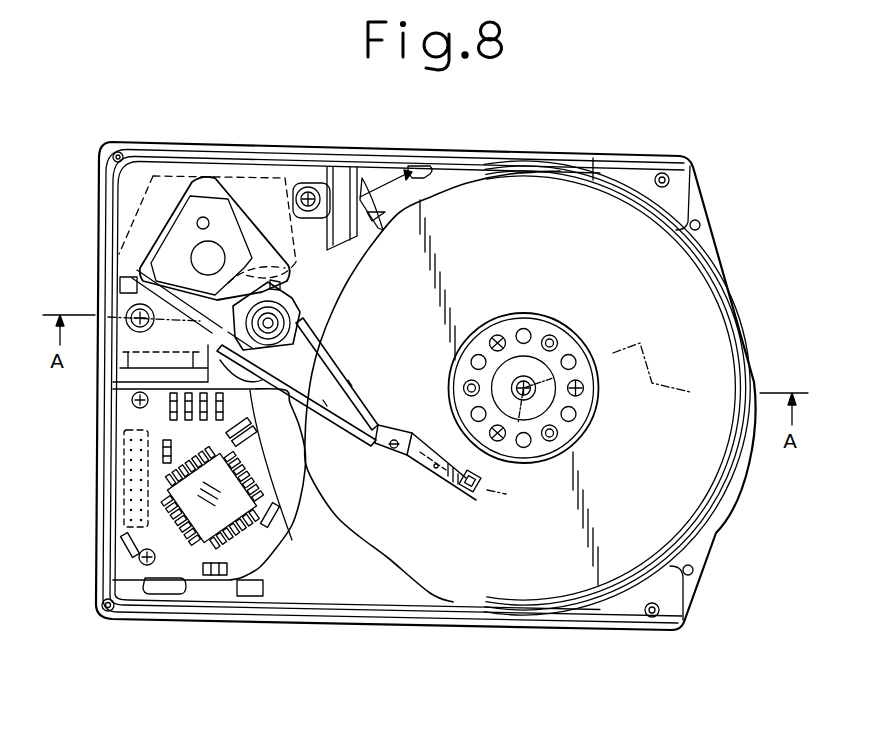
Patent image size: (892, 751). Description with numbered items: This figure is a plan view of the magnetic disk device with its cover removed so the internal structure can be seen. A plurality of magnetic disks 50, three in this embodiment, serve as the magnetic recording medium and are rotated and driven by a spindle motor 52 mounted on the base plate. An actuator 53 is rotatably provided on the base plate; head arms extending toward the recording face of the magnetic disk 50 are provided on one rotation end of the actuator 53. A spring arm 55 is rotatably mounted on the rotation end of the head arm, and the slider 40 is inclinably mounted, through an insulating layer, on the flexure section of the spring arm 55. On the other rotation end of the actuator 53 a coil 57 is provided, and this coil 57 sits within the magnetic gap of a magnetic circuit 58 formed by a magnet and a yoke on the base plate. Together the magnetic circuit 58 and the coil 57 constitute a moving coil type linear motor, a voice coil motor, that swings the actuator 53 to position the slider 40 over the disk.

The slider 40 is at (473, 472).
The magnetic disk 50 is at (683, 518).
The spindle motor 52 is at (545, 468).
The actuator 53 is at (347, 348).
The spring arm 55 is at (432, 476).
The coil 57 is at (189, 200).
The magnetic circuit 58 is at (272, 178).